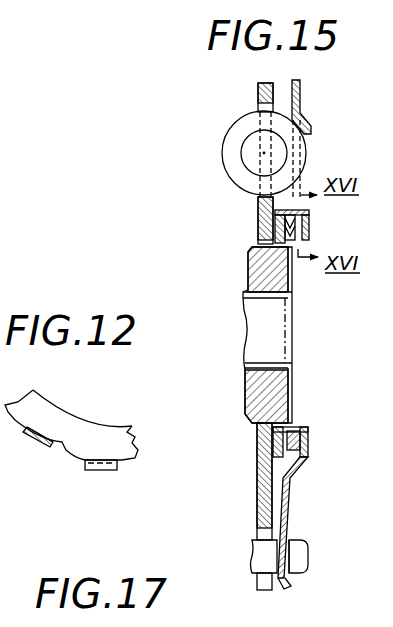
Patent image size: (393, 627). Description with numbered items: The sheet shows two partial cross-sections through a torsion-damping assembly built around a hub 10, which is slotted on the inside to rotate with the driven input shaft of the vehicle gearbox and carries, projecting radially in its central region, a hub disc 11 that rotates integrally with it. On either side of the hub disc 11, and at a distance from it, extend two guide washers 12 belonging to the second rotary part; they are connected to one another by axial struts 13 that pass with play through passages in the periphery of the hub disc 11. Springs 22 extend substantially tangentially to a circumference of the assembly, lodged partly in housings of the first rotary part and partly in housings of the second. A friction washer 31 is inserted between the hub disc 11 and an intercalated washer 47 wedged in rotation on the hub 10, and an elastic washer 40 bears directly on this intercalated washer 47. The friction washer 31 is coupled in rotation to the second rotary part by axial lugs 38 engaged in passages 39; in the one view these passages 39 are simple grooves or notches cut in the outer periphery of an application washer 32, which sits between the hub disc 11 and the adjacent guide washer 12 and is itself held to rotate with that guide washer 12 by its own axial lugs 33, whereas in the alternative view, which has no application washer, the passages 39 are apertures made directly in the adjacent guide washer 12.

In FIG. 15, the hub 10 is at (246, 272).
In FIG. 15, the hub disc 11 is at (255, 89).
In FIG. 15, the guide washer 12 is at (302, 100).
In FIG. 15, the axial strut 13 is at (310, 553).
In FIG. 15, the spring 22 is at (236, 136).
In FIG. 15, the friction washer 31 is at (270, 224).
In FIG. 12, the friction washer 31 is at (33, 442).
In FIG. 12, the application washer 32 is at (135, 461).
In FIG. 12, the axial lug 33 is at (100, 471).
In FIG. 15, the axial lug 38 is at (311, 209).
In FIG. 12, the axial lug 38 is at (46, 447).
In FIG. 15, the passage 39 is at (311, 222).
In FIG. 12, the passage 39 is at (47, 430).
In FIG. 15, the elastic washer 40 is at (309, 438).
In FIG. 15, the intercalated washer 47 is at (262, 231).